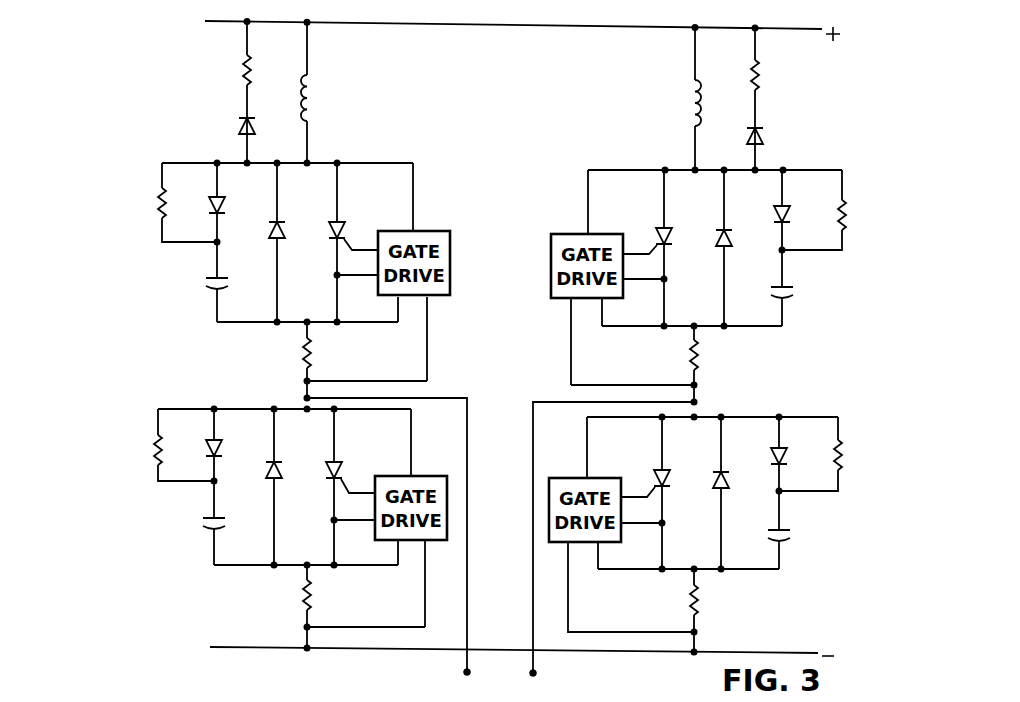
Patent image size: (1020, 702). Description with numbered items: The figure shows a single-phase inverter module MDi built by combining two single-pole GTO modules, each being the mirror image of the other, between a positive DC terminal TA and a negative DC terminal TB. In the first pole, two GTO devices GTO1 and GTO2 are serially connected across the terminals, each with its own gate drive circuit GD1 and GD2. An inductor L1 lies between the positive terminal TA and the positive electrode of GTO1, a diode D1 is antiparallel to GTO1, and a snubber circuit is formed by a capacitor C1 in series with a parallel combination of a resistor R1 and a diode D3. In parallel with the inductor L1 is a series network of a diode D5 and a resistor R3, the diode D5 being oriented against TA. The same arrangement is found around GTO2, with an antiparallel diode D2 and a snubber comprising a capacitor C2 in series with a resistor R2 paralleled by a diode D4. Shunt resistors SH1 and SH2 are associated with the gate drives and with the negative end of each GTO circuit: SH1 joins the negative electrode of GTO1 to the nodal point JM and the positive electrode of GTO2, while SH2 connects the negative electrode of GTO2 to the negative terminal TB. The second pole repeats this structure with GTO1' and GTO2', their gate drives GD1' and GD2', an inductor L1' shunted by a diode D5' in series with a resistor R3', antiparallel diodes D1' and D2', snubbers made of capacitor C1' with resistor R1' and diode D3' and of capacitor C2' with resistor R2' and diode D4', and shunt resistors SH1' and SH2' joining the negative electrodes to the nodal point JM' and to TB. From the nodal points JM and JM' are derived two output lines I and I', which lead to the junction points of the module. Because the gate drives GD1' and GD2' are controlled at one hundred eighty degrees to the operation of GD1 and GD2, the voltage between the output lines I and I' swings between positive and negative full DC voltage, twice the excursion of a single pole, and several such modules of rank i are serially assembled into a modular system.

The positive DC voltage terminal TA is at (465, 24).
The negative DC voltage terminal TB is at (612, 653).
The single-phase module MDi is at (507, 345).
The resistor R3 is at (226, 93).
The diode D5 is at (228, 131).
The inductor L1 is at (321, 92).
The resistor R1 is at (176, 203).
The diode D3 is at (204, 202).
The capacitor C1 is at (202, 282).
The diode D1 is at (261, 242).
The GTO device GTO1 is at (361, 242).
The gate drive circuit GD1 is at (423, 272).
The shunt resistor SH1 is at (282, 360).
The nodal point JM is at (338, 381).
The output line I is at (387, 535).
The junction point Ji is at (463, 672).
The resistor R2 is at (173, 445).
The diode D4 is at (203, 445).
The capacitor C2 is at (198, 523).
The diode D2 is at (262, 487).
The GTO device GTO2 is at (357, 487).
The gate drive circuit GD2 is at (415, 518).
The shunt resistor SH2 is at (282, 606).
The inductor L1' is at (678, 98).
The resistor R3' is at (777, 99).
The diode D5' is at (776, 142).
The gate drive circuit GD1' is at (578, 277).
The GTO device GTO1' is at (639, 248).
The diode D1' is at (739, 248).
The diode D3' is at (796, 210).
The resistor R1' is at (828, 210).
The capacitor C1' is at (800, 288).
The shunt resistor SH1' is at (718, 364).
The nodal point JM' is at (655, 386).
The output line I' is at (596, 537).
The gate drive circuit GD2' is at (616, 524).
The GTO device GTO2' is at (638, 493).
The diode D2' is at (733, 493).
The diode D4' is at (792, 454).
The resistor R2' is at (823, 454).
The capacitor C2' is at (794, 530).
The shunt resistor SH2' is at (718, 610).